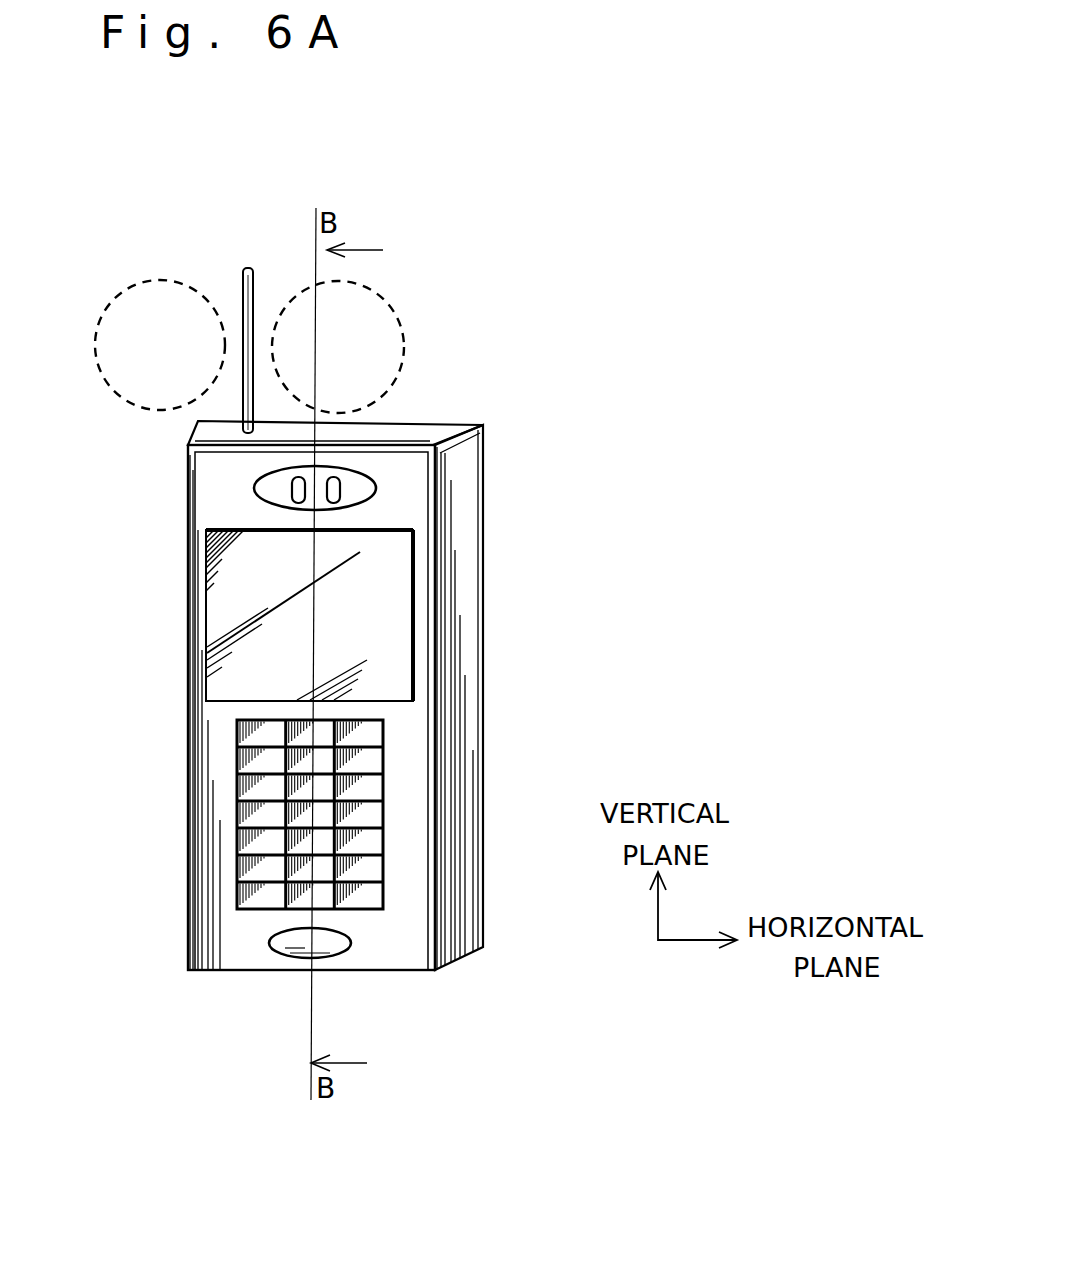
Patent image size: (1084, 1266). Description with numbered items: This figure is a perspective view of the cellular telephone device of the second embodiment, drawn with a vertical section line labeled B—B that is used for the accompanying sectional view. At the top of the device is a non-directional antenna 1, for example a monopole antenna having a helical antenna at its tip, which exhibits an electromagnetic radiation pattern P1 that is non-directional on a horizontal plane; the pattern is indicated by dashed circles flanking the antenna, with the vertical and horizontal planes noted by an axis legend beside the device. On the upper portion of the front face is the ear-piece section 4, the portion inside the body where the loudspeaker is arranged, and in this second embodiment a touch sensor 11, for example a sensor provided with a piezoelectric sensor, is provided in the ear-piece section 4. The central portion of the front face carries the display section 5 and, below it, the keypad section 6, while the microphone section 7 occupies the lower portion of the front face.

The non-directional antenna 1 is at (243, 288).
The electromagnetic radiation pattern P1 is at (403, 333).
The ear-piece section 4 is at (377, 487).
The touch sensor 11 is at (288, 498).
The display section 5 is at (413, 608).
The keypad section 6 is at (385, 793).
The microphone section 7 is at (350, 943).